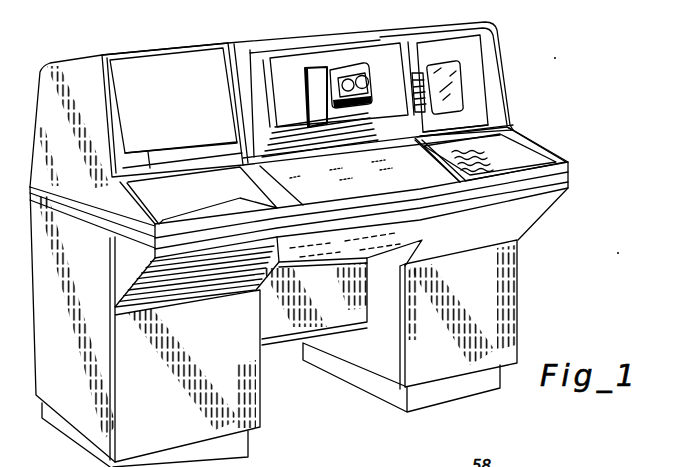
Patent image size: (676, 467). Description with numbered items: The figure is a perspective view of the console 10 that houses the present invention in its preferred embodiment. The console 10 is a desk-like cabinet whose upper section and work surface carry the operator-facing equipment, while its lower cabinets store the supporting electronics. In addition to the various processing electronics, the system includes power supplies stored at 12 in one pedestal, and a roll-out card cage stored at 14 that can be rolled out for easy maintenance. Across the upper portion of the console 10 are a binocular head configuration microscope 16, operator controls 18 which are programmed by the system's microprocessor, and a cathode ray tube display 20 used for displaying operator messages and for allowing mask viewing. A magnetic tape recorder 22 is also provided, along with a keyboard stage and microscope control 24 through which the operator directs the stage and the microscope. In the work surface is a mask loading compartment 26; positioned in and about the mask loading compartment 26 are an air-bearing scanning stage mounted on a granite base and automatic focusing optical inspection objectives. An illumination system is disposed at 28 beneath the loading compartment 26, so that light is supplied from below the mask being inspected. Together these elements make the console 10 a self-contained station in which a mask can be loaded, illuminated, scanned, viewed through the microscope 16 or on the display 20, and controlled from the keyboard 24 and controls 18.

The console 10 is at (331, 402).
The power supplies 12 is at (253, 402).
The roll-out card cage 14 is at (159, 70).
The binocular head configuration microscope 16 is at (357, 76).
The operator controls 18 is at (415, 73).
The cathode ray tube display 20 is at (460, 78).
The magnetic tape recorder 22 is at (507, 152).
The keyboard stage and microscope control 24 is at (485, 167).
The mask loading compartment 26 is at (423, 177).
The illumination system 28 is at (290, 318).